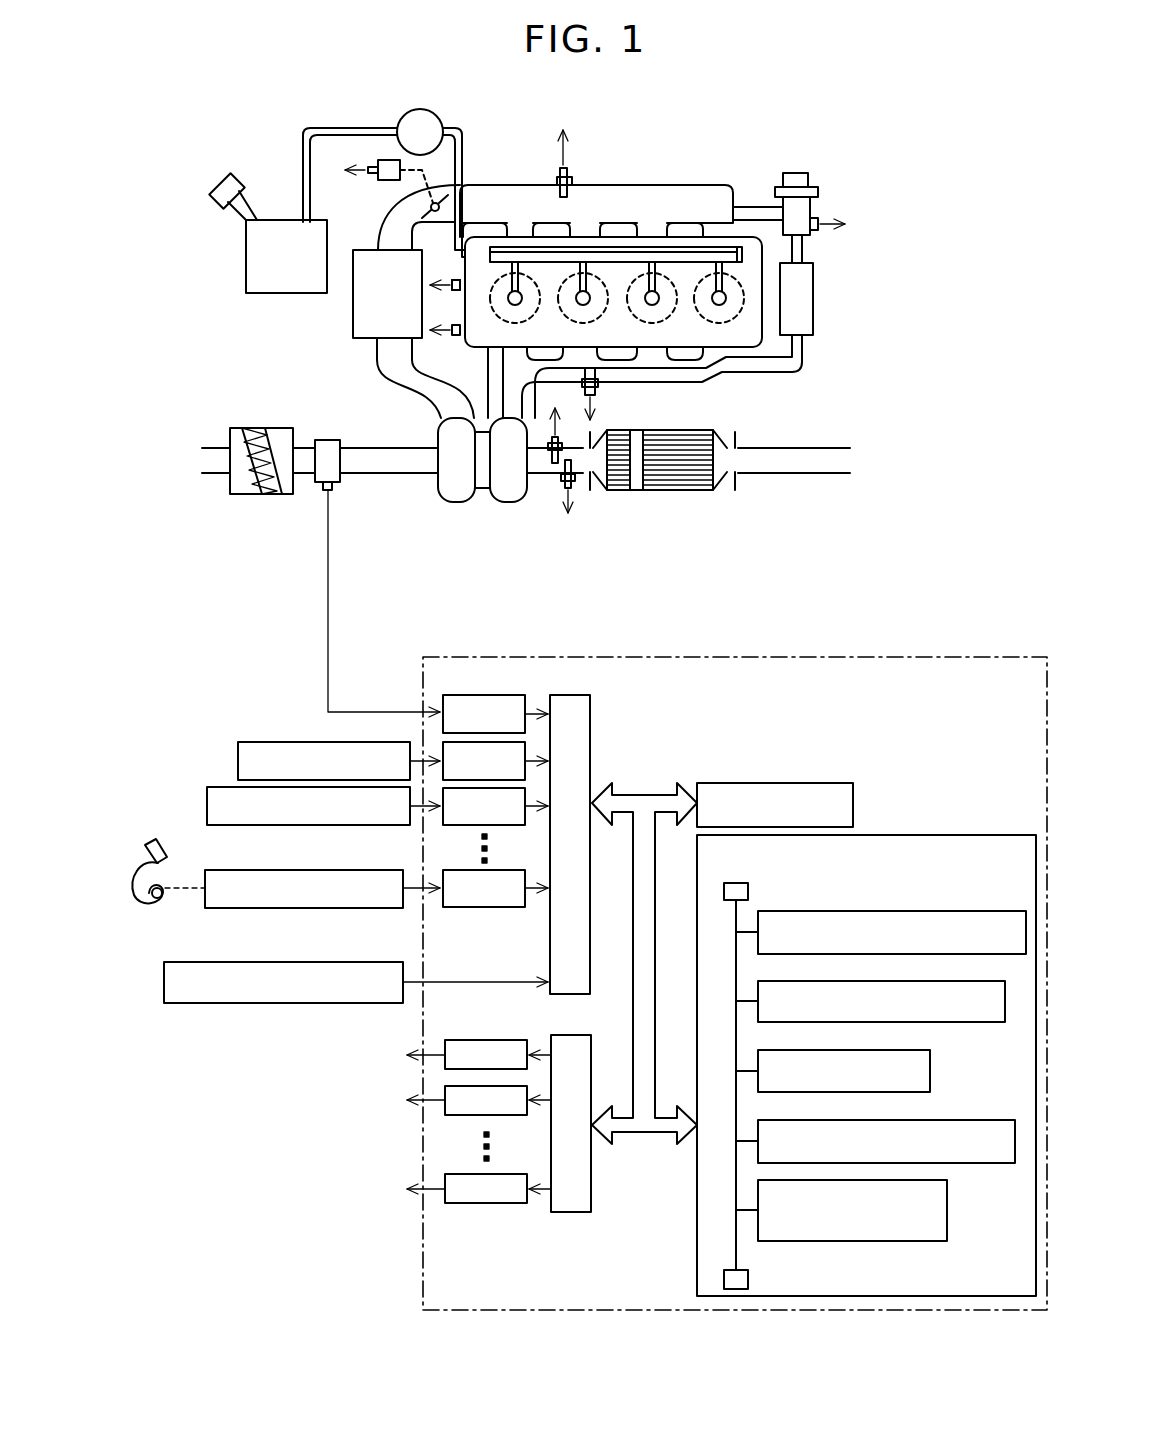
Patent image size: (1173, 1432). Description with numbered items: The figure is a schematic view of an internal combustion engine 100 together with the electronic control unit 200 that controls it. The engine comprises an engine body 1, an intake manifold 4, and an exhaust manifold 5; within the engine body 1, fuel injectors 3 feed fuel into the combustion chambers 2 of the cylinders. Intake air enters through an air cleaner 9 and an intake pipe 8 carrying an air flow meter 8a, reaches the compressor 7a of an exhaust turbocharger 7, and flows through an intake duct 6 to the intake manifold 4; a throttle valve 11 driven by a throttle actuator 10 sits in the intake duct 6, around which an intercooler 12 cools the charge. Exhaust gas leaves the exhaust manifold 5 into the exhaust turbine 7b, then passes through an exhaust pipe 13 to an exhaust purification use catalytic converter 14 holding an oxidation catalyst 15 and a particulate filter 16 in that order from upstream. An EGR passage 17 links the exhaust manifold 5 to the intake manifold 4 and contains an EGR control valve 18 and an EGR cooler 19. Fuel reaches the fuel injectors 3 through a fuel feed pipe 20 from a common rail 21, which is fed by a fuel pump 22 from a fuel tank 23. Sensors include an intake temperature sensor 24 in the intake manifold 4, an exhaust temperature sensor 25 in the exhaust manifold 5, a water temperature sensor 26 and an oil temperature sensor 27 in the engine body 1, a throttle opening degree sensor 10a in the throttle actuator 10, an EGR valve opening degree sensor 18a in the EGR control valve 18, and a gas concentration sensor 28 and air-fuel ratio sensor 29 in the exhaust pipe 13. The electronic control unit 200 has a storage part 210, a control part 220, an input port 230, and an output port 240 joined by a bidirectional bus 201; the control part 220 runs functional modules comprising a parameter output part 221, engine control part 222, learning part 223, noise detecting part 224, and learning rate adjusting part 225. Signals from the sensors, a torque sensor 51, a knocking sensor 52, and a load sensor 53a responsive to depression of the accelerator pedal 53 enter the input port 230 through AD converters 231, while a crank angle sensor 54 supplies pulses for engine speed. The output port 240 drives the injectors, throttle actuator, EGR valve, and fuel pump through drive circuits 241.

The internal combustion engine 100 is at (846, 158).
The engine body 1 is at (743, 232).
The combustion chambers 2 is at (522, 318).
The fuel injectors 3 is at (520, 308).
The intake manifold 4 is at (683, 200).
The exhaust manifold 5 is at (628, 374).
The intake duct 6 is at (392, 219).
The exhaust turbocharger 7 is at (481, 510).
The compressor 7a is at (455, 495).
The exhaust turbine 7b is at (512, 495).
The intake pipe 8 is at (367, 470).
The air flow meter 8a is at (326, 485).
The air cleaner 9 is at (235, 428).
The throttle actuator 10 is at (390, 160).
The throttle opening degree sensor 10a is at (372, 175).
The throttle valve 11 is at (447, 197).
The intercooler 12 is at (358, 320).
The exhaust pipe 13 is at (545, 470).
The exhaust purification use catalytic converter 14 is at (722, 490).
The oxidation catalyst 15 is at (637, 491).
The particulate filter 16 is at (690, 492).
The EGR passage 17 is at (803, 350).
The EGR control valve 18 is at (805, 208).
The EGR valve opening degree sensor 18a is at (820, 233).
The EGR cooler 19 is at (814, 298).
The fuel feed pipe 20 is at (728, 290).
The common rail 21 is at (612, 254).
The fuel pump 22 is at (444, 126).
The fuel tank 23 is at (272, 280).
The intake temperature sensor 24 is at (569, 180).
The exhaust temperature sensor 25 is at (596, 392).
The water temperature sensor 26 is at (452, 334).
The oil temperature sensor 27 is at (452, 283).
The gas concentration sensor 28 is at (560, 442).
The air-fuel ratio sensor 29 is at (570, 489).
The electronic control unit 200 is at (838, 656).
The bidirectional bus 201 is at (648, 795).
The storage part 210 is at (745, 783).
The control part 220 is at (863, 835).
The parameter output part 221 is at (930, 911).
The engine control part 222 is at (930, 981).
The learning part 223 is at (930, 1072).
The noise detecting part 224 is at (955, 1120).
The learning rate adjusting part 225 is at (947, 1212).
The input port 230 is at (592, 754).
The AD converters 231 is at (487, 695).
The output port 240 is at (592, 1196).
The drive circuits 241 is at (445, 1180).
The torque sensor 51 is at (305, 742).
The knocking sensor 52 is at (228, 787).
The accelerator pedal 53 is at (160, 842).
The load sensor 53a is at (310, 870).
The crank angle sensor 54 is at (220, 1003).